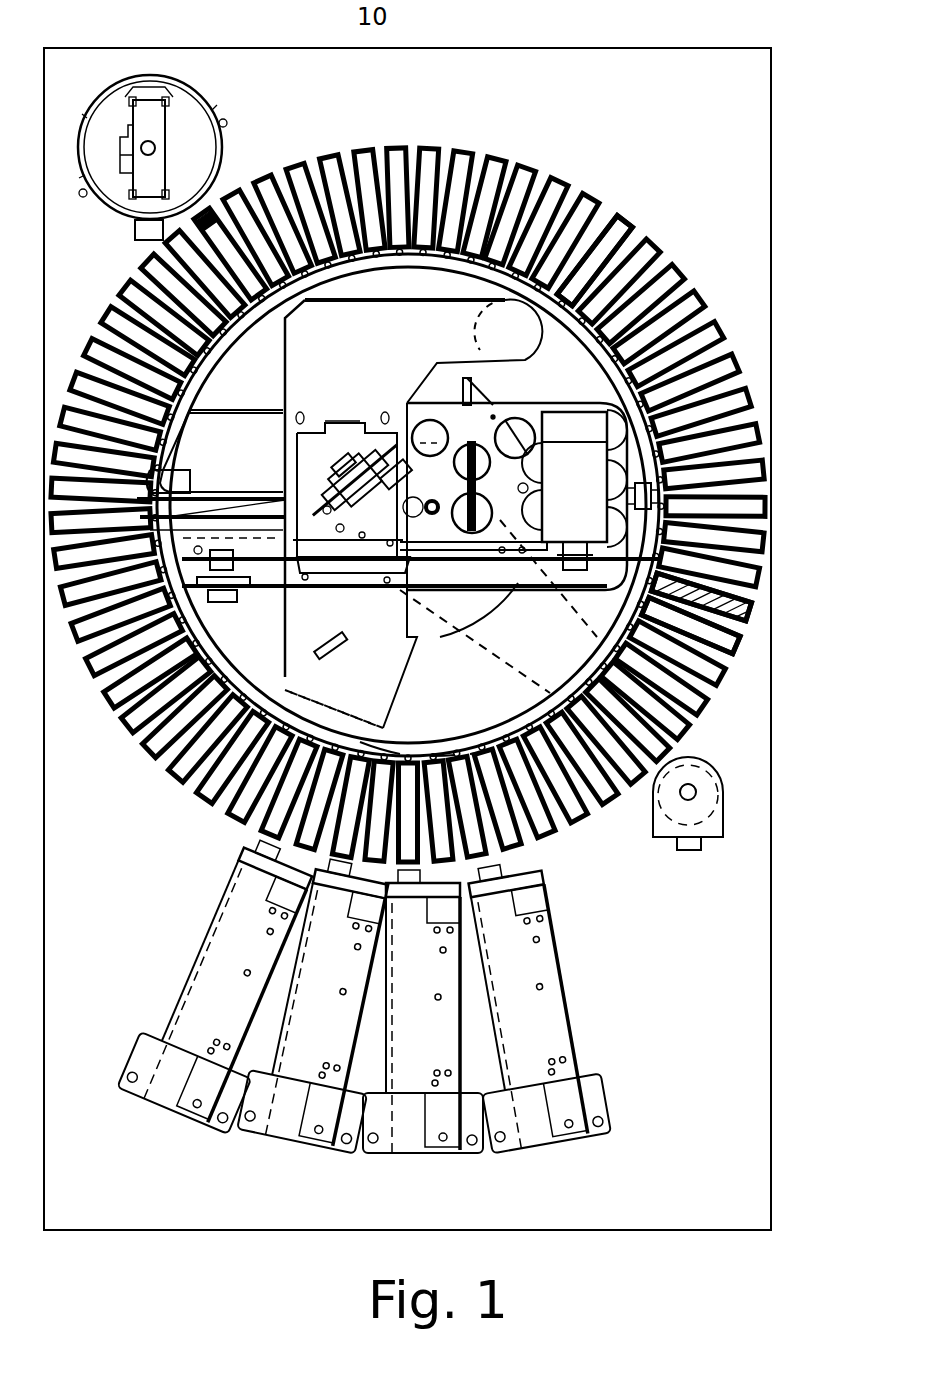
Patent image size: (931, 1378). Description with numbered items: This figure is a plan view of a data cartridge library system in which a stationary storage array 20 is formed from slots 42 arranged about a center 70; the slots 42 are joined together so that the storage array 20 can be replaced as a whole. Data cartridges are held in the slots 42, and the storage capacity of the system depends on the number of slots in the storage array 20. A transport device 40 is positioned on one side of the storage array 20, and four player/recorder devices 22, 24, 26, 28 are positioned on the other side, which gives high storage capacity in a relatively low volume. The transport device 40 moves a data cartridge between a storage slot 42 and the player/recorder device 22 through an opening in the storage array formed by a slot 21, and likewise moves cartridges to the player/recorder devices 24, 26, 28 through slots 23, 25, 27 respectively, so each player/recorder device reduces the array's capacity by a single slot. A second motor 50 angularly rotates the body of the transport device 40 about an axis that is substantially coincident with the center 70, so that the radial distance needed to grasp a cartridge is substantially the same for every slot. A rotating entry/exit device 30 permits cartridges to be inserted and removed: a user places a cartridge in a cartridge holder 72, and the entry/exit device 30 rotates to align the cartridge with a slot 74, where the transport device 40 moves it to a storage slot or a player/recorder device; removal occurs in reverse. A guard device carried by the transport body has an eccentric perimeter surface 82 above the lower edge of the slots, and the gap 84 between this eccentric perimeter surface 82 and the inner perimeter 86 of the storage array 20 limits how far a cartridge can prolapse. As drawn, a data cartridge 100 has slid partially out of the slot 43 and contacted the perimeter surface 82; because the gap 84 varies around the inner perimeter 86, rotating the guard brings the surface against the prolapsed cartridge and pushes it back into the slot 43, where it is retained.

The storage array 20 is at (574, 176).
The slot 21 is at (313, 730).
The player/recorder device 22 is at (166, 1103).
The slot 23 is at (383, 744).
The player/recorder device 24 is at (297, 1140).
The slot 25 is at (448, 740).
The player/recorder device 26 is at (400, 1153).
The slot 27 is at (473, 753).
The player/recorder device 28 is at (540, 1140).
The rotating entry/exit device 30 is at (200, 149).
The transport device 40 is at (272, 455).
The slots 42 is at (624, 220).
The slot 43 is at (750, 610).
The second motor 50 is at (668, 852).
The center 70 is at (425, 482).
The cartridge holder 72 is at (176, 113).
The slot 74 is at (214, 232).
The eccentric perimeter surface 82 is at (305, 303).
The gap 84 is at (612, 622).
The inner perimeter 86 is at (578, 675).
The data cartridge 100 is at (753, 638).